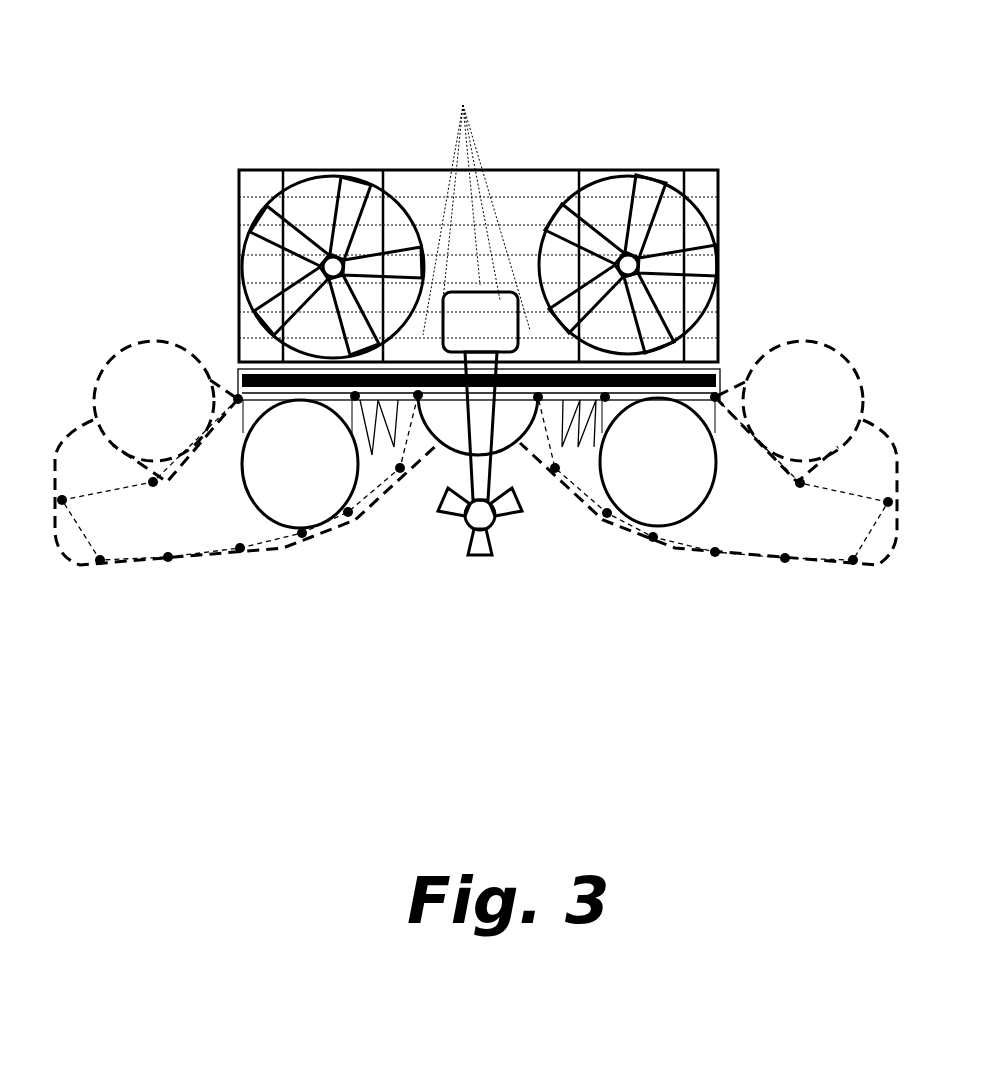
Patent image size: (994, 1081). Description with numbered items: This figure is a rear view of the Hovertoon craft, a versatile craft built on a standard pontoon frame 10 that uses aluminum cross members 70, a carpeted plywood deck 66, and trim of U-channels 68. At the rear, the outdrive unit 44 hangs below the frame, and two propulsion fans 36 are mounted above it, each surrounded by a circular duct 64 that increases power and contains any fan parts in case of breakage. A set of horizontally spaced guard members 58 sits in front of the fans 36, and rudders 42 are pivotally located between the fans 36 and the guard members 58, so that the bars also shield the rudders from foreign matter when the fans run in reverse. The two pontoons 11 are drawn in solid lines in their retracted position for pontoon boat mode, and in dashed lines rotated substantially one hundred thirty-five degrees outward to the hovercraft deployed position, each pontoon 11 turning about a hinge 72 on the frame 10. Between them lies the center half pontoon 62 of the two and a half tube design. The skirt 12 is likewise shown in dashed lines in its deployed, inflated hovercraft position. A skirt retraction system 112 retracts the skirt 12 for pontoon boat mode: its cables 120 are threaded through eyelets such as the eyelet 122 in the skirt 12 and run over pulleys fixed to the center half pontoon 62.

The frame 10 is at (726, 384).
The pontoon 11 is at (117, 447).
The skirt 12 is at (203, 565).
The propulsion fan 36 is at (417, 178).
The rudder 42 is at (385, 180).
The outdrive unit 44 is at (478, 568).
The horizontal guard member 58 is at (472, 180).
The center half pontoon 62 is at (408, 438).
The circular duct 64 is at (240, 185).
The deck 66 is at (720, 312).
The U-channel 68 is at (722, 388).
The cross member 70 is at (540, 405).
The hinge 72 is at (236, 398).
The skirt retraction system 112 is at (440, 445).
The cable 120 is at (93, 538).
The eyelet 122 is at (168, 560).